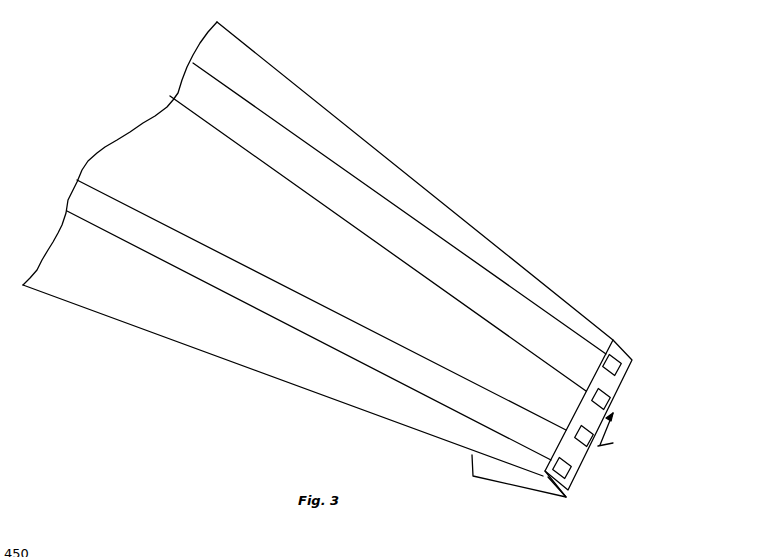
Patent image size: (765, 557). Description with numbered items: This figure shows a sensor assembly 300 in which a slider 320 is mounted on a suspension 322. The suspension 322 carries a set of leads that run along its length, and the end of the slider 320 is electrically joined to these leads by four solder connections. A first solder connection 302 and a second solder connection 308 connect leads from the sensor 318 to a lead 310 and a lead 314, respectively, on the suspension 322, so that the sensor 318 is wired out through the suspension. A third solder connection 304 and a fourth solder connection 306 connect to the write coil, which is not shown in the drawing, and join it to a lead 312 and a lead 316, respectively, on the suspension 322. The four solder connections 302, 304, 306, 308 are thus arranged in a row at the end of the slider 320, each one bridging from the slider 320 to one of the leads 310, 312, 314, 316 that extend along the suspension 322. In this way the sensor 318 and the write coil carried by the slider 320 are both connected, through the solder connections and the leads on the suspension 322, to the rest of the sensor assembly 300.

The sensor assembly 300 is at (172, 412).
The first solder connection 302 is at (560, 478).
The third solder connection 304 is at (582, 443).
The fourth solder connection 306 is at (603, 390).
The second solder connection 308 is at (632, 360).
The lead 310 is at (283, 322).
The lead 312 is at (420, 348).
The lead 314 is at (475, 265).
The lead 316 is at (527, 338).
The sensor 318 is at (607, 430).
The slider 320 is at (505, 477).
The suspension 322 is at (406, 426).